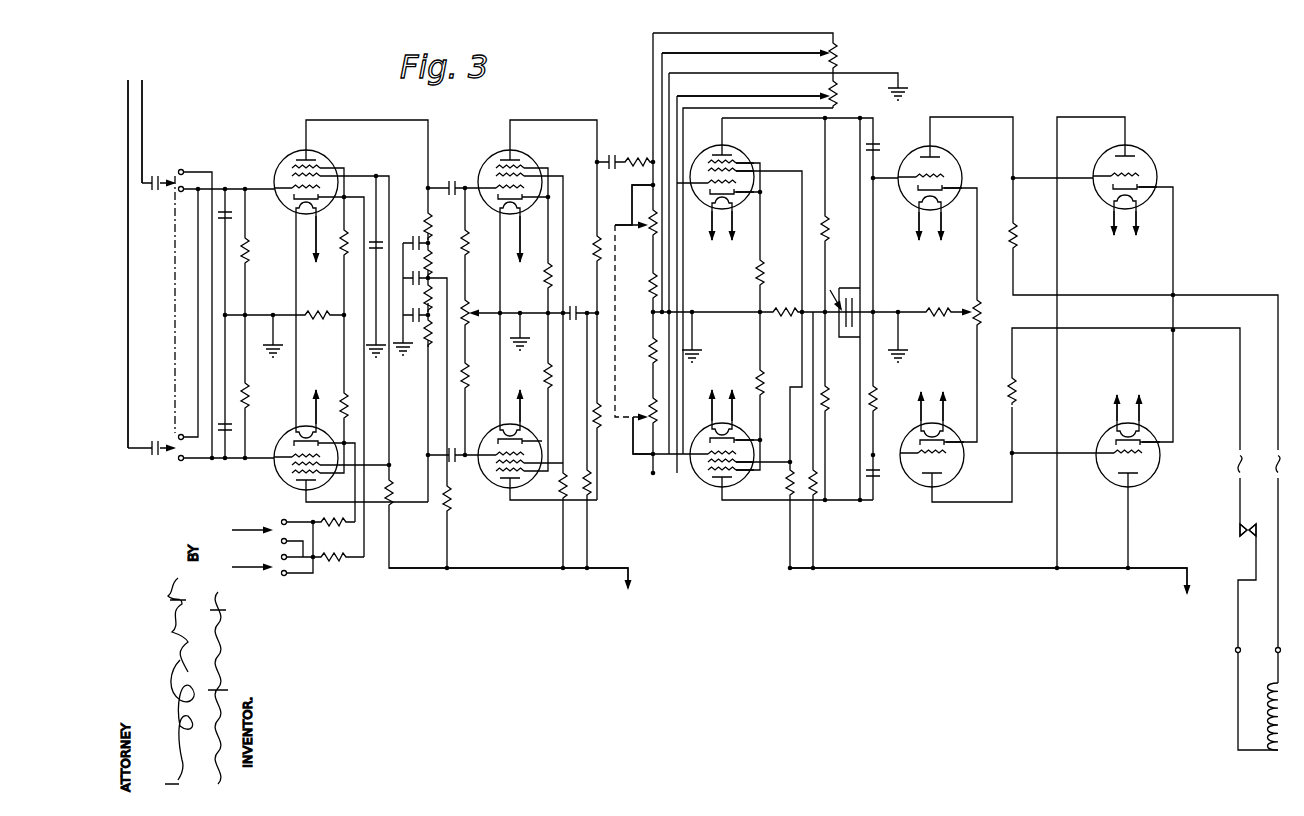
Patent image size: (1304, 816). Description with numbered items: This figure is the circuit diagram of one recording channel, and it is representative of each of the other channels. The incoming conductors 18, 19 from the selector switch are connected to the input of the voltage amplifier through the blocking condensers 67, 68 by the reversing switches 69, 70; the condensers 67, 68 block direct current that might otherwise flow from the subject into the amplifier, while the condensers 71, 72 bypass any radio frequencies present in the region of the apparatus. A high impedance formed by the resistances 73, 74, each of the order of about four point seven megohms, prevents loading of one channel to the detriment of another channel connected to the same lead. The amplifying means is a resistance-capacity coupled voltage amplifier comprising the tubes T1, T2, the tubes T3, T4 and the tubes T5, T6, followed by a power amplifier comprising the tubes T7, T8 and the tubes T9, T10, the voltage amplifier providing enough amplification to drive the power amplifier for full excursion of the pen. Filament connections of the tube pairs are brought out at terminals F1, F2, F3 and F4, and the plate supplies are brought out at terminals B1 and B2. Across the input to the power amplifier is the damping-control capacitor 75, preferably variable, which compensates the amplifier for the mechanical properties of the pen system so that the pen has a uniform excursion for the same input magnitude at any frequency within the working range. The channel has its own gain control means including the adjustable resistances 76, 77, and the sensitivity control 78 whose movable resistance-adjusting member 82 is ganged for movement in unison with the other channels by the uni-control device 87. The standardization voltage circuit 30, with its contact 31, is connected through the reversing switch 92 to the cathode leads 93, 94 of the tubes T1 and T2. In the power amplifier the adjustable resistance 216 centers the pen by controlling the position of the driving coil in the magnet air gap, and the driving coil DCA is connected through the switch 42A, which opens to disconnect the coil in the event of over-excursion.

The conductor 19 is at (130, 80).
The conductor 18 is at (142, 96).
The blocking condenser 67 is at (155, 192).
The blocking condenser 68 is at (154, 442).
The reversing switch 69 is at (192, 180).
The reversing switch 70 is at (193, 448).
The bypass condenser 71 is at (232, 215).
The bypass condenser 72 is at (232, 430).
The resistance 73 is at (250, 258).
The resistance 74 is at (250, 395).
The tube T1 is at (322, 165).
The tube T2 is at (282, 478).
The tube T3 is at (538, 160).
The tube T4 is at (492, 480).
The tube T5 is at (745, 160).
The tube T6 is at (700, 480).
The tube T7 is at (952, 160).
The tube T8 is at (910, 482).
The tube T9 is at (1150, 165).
The tube T10 is at (1160, 458).
The capacitor 75 is at (845, 338).
The adjustable resistance 76 is at (633, 443).
The adjustable resistance 77 is at (630, 216).
The sensitivity control 78 is at (833, 24).
The movable resistance-adjusting member 82 is at (720, 97).
The uni-control device 87 is at (740, 54).
The adjustable resistance 216 is at (977, 312).
The reversing switch 92 is at (250, 530).
The cathode lead 93 is at (350, 560).
The cathode lead 94 is at (350, 524).
The plate supply terminal B1 is at (513, 593).
The plate supply terminal B2 is at (988, 594).
The switch 42A is at (1240, 532).
The standardization voltage circuit 30 is at (1277, 650).
The contact 31 is at (1236, 650).
The relay coil DCA is at (1280, 756).
The filament terminals F1 is at (417, 320).
The filament terminals F2 is at (723, 316).
The filament terminals F3 is at (930, 316).
The filament terminals F4 is at (1125, 316).